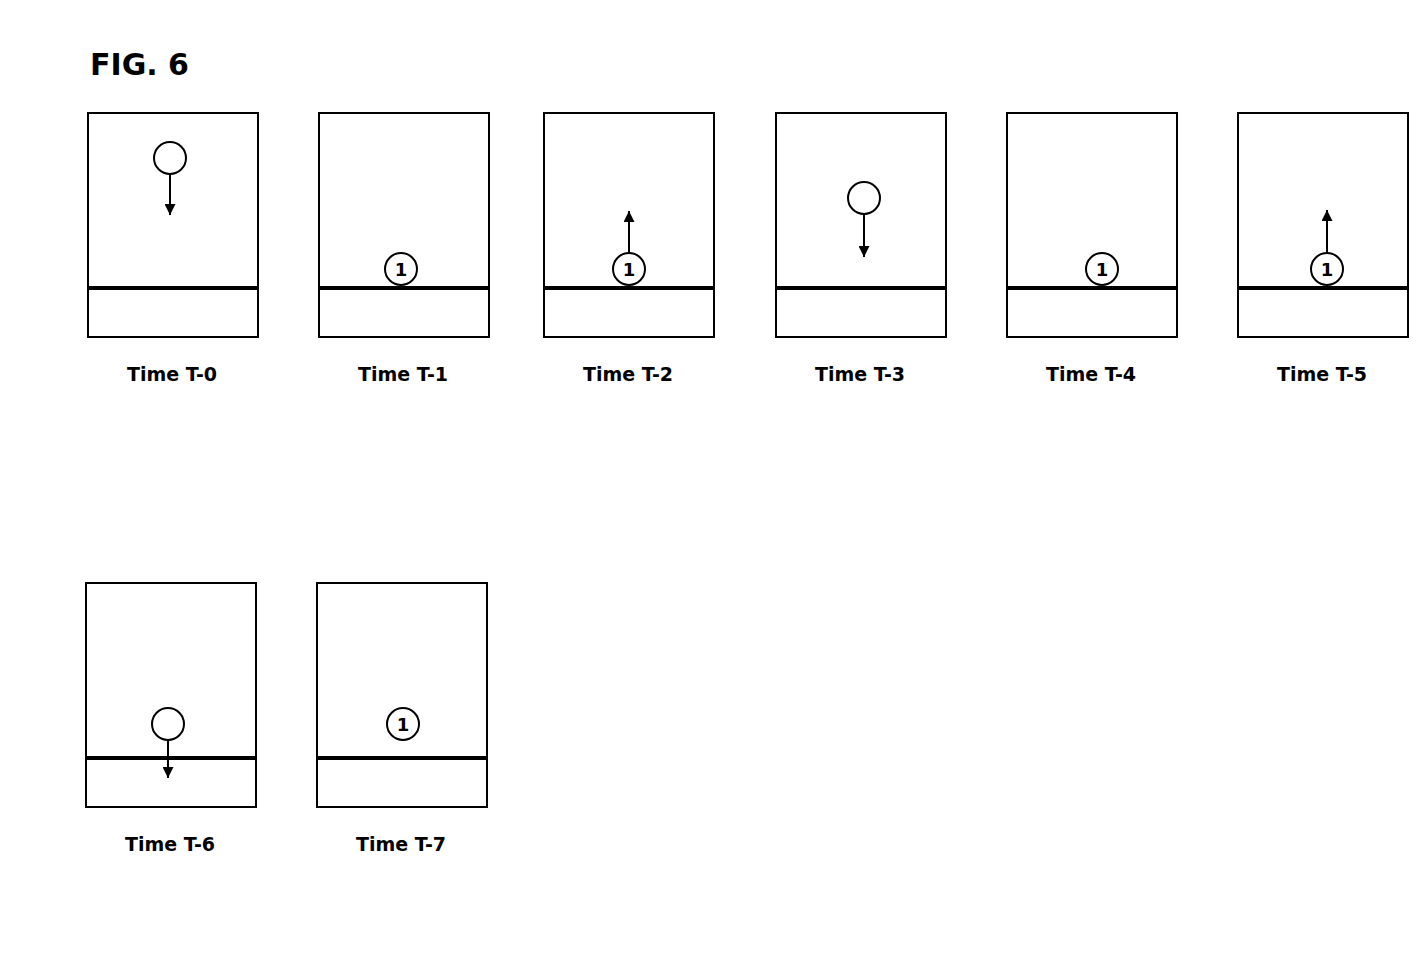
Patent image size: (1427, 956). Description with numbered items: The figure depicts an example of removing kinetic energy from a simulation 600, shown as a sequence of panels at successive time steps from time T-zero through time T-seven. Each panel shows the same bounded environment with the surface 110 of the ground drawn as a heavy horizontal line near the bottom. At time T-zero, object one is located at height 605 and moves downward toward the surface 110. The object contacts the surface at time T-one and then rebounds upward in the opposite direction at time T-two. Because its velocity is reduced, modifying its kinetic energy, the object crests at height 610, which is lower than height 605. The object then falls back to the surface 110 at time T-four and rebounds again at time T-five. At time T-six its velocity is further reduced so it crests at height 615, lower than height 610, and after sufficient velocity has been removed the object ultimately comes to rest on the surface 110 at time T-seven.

The simulation 600 is at (180, 103).
The surface 110 is at (198, 290).
The height 605 is at (172, 142).
The height 610 is at (866, 182).
The height 615 is at (170, 708).